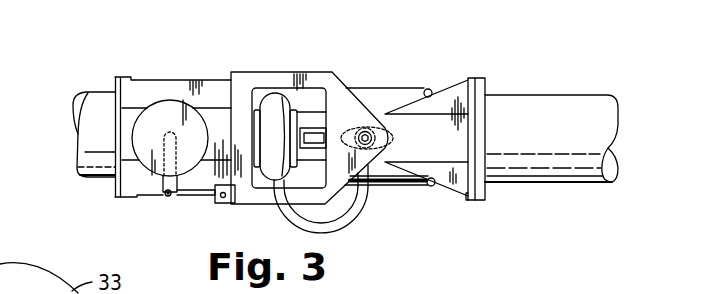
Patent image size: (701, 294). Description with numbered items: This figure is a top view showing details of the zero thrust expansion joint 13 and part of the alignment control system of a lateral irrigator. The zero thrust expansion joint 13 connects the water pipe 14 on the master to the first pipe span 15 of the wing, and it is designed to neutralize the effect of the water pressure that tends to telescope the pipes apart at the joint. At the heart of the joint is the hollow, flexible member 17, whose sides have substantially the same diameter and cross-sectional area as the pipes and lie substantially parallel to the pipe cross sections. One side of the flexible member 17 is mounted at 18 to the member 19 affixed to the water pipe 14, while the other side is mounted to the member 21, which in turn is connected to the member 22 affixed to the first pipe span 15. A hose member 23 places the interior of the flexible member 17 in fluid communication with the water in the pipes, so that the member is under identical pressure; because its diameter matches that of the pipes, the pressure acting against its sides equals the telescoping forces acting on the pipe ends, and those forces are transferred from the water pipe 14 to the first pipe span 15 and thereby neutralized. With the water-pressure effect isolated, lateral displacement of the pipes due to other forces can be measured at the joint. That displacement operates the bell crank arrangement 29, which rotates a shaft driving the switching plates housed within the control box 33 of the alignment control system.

The zero thrust expansion joint 13 is at (125, 48).
The water pipe 14 is at (97, 91).
The first pipe span 15 is at (525, 100).
The hollow flexible member 17 is at (270, 184).
The mounting 18 is at (310, 128).
The member affixed to the pipe 19 is at (213, 92).
The member 21 is at (288, 206).
The member affixed to the pipe span 22 is at (442, 180).
The hose member 23 is at (357, 222).
The bell crank arrangement 29 is at (173, 200).
The control box 33 is at (168, 106).